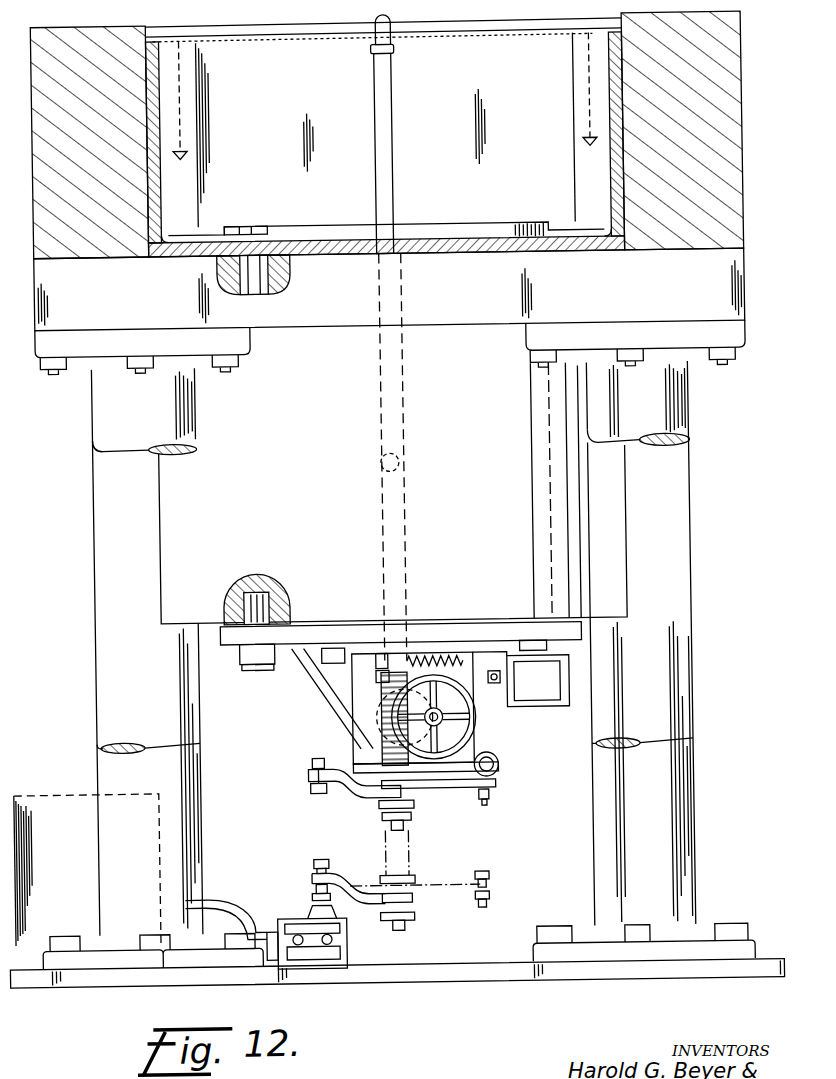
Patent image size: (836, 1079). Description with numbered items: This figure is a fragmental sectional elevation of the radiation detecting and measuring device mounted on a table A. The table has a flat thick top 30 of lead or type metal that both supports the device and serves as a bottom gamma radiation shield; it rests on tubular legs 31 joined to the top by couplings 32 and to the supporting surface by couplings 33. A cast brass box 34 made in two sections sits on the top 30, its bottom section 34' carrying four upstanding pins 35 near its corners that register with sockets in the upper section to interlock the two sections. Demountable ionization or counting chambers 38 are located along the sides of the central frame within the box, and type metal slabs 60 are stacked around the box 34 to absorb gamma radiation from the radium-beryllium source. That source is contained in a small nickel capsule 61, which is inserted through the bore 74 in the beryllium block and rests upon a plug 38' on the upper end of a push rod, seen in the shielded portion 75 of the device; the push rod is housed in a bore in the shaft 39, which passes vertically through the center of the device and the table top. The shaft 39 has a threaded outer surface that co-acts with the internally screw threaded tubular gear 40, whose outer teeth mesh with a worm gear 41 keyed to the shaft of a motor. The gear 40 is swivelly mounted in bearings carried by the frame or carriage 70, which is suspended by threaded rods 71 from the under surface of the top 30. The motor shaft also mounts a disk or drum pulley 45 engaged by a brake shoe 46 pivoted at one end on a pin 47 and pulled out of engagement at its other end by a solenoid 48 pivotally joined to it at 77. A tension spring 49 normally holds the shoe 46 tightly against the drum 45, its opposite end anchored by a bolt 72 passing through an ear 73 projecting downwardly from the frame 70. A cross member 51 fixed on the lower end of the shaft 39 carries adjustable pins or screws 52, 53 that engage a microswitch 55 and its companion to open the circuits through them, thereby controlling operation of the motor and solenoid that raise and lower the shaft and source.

The table A is at (748, 266).
The type metal slabs 60 is at (742, 109).
The bottom section of box 34' is at (384, 144).
The cast brass box 34 is at (384, 144).
The upstanding pins 35 is at (187, 104).
The table top 30 is at (676, 293).
The couplings 32 is at (252, 345).
The shaft 39 is at (393, 175).
The nickel capsule 61 is at (386, 33).
The plug 38' is at (409, 52).
The ionization or counting chambers 38 is at (409, 52).
The bore 74 is at (406, 431).
The tubular legs 31 is at (105, 417).
The shielded portion 75 is at (292, 469).
The frame or carriage 70 is at (348, 706).
The threaded rods 71 is at (250, 605).
The bolt 72 is at (377, 653).
The ear 73 is at (374, 676).
The tension spring 49 is at (431, 657).
The pivotal joint 77 is at (492, 672).
The solenoid 48 is at (546, 692).
The internally screw threaded tubular gear 40 is at (362, 728).
The worm gear 41 is at (468, 721).
The brake shoe 46 is at (495, 760).
The pin 47 is at (492, 772).
The adjustable pin or screw 52 is at (485, 801).
The adjustable pin or screw 53 is at (309, 760).
The cross member 51 is at (352, 792).
The disk or drum pulley 45 is at (444, 752).
The microswitch 55 is at (316, 901).
The couplings 33 is at (110, 965).